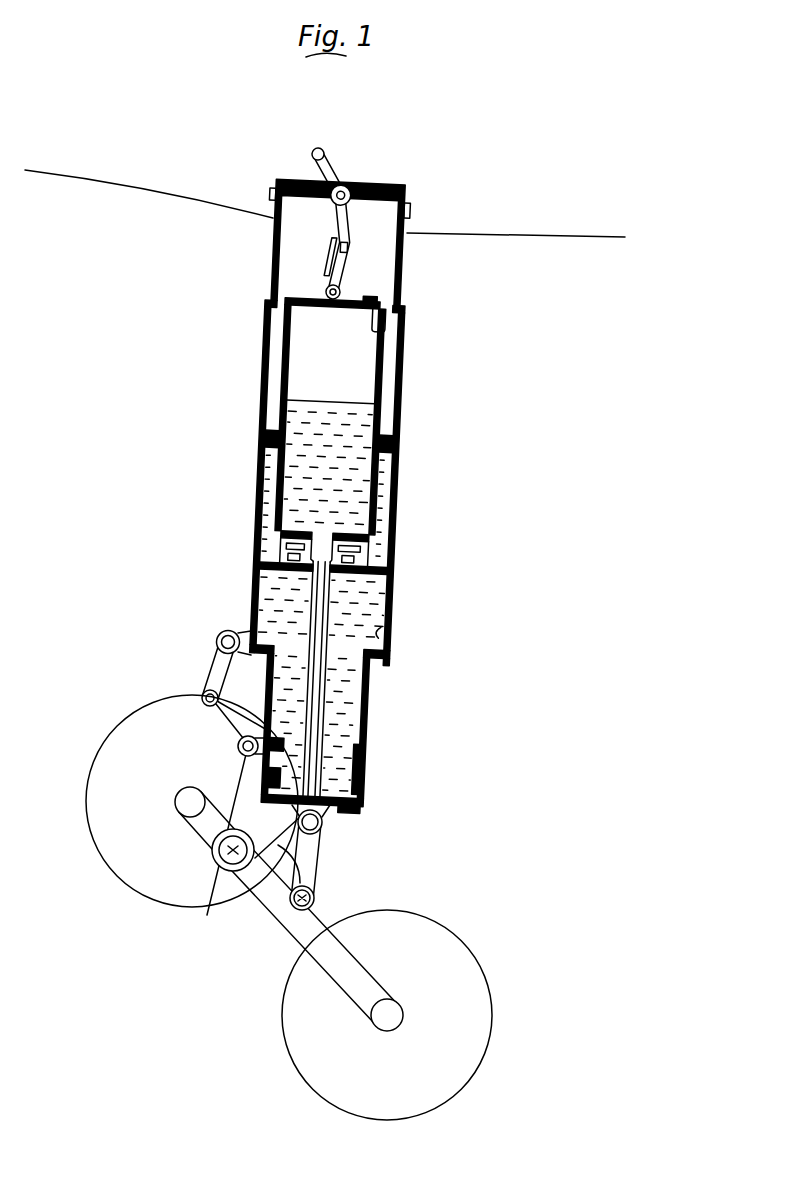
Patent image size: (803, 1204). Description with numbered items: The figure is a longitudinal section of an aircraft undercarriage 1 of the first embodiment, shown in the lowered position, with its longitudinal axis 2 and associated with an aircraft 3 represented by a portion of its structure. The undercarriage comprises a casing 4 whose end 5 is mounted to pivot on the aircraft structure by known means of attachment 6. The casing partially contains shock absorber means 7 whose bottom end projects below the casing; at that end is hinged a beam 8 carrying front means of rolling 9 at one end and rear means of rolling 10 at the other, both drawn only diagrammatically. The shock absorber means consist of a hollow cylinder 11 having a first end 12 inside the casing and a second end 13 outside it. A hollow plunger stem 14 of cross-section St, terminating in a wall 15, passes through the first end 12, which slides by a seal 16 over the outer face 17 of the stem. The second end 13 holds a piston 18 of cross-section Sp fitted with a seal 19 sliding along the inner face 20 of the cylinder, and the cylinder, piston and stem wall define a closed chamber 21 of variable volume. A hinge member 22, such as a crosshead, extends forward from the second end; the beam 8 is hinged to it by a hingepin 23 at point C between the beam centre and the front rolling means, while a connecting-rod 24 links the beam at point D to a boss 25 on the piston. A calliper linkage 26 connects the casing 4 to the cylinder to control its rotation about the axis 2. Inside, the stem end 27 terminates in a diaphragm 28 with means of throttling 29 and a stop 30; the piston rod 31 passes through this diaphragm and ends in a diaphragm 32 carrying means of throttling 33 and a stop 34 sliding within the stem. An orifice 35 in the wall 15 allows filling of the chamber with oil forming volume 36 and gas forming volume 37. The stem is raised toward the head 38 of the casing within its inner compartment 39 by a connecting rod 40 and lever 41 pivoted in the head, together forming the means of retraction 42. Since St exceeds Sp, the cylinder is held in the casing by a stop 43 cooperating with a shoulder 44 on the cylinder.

The undercarriage 1 is at (257, 398).
The longitudinal axis 2 is at (333, 348).
The aircraft 3 is at (155, 188).
The casing 4 is at (263, 330).
The end of casing 5 is at (270, 228).
The means of attachment 6 is at (276, 213).
The shock absorber means 7 is at (275, 462).
The beam 8 is at (270, 901).
The front means of rolling 9 is at (138, 715).
The rear means of rolling 10 is at (444, 947).
The hollow cylinder 11 is at (385, 638).
The first end 12 is at (380, 445).
The second end 13 is at (368, 808).
The hollow plunger stem 14 is at (380, 387).
The wall 15 is at (305, 300).
The seal 16 is at (263, 443).
The outer face 17 is at (282, 366).
The piston 18 is at (362, 745).
The seal 19 is at (367, 778).
The inner face 20 is at (348, 716).
The closed chamber 21 is at (278, 586).
The hinge member 22 is at (245, 807).
The hingepin 23 is at (227, 817).
The connecting-rod 24 is at (313, 866).
The boss 25 is at (326, 809).
The calliper linkage 26 is at (207, 680).
The end of plunger stem 27 is at (378, 555).
The diaphragm 28 is at (360, 580).
The means of throttling 29 is at (372, 590).
The stop 30 is at (357, 553).
The rod 31 is at (362, 688).
The diaphragm 32 is at (313, 532).
The means of throttling 33 is at (290, 540).
The stop 34 is at (297, 557).
The orifice 35 is at (408, 322).
The volume of incompressible fluid 36 is at (300, 626).
The volume of compressible fluid 37 is at (324, 371).
The head of casing 38 is at (393, 188).
The inner compartment 39 is at (383, 232).
The connecting rod 40 is at (343, 272).
The lever 41 is at (347, 229).
The means of retraction 42 is at (372, 217).
The stop 43 is at (387, 660).
The shoulder 44 is at (375, 655).
The hinge point C is at (230, 849).
The hinge point D is at (316, 898).
The cross-section of plunger stem St is at (277, 414).
The cross-section of piston Sp is at (264, 757).